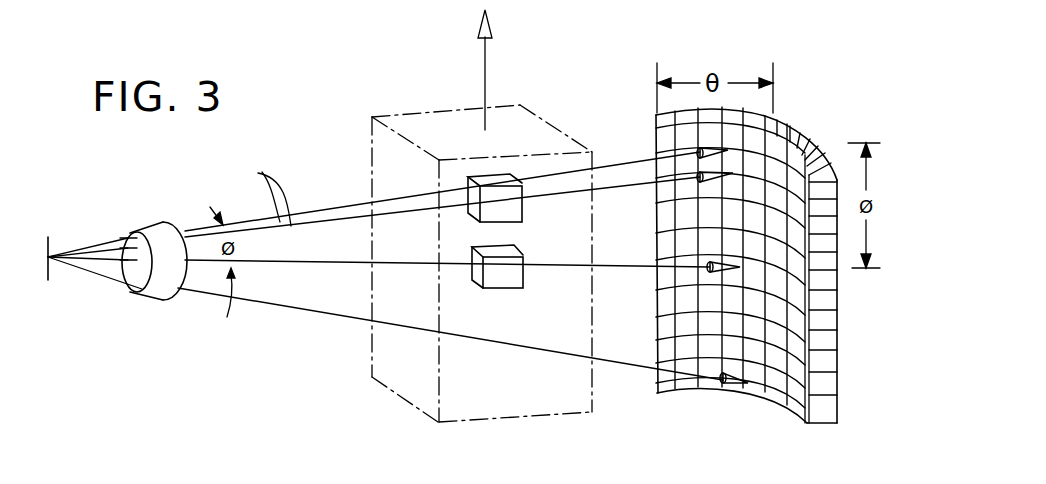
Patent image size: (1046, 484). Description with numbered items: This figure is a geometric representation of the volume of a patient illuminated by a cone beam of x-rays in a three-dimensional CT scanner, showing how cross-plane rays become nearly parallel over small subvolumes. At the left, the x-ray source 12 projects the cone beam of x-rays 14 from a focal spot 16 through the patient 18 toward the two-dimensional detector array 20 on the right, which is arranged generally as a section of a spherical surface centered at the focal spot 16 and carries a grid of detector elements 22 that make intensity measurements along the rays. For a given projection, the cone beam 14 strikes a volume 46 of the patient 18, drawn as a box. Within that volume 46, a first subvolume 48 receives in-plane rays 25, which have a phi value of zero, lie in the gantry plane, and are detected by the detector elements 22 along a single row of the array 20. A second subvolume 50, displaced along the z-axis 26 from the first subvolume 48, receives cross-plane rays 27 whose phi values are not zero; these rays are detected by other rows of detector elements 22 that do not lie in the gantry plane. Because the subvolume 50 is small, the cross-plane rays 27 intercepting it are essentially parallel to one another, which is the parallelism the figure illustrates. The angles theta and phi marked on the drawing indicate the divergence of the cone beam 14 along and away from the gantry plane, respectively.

The x-ray source 12 is at (146, 312).
The cone beam of x-rays 14 is at (318, 180).
The focal spot 16 is at (47, 272).
The patient 18 is at (527, 433).
The two-dimensional detector array 20 is at (822, 433).
The detector elements 22 is at (773, 313).
The in-plane rays 25 is at (356, 264).
The Z axis 26 is at (486, 62).
The cross-plane rays 27 is at (260, 193).
The volume 46 is at (458, 412).
The first subvolume 48 is at (514, 288).
The second subvolume 50 is at (519, 208).